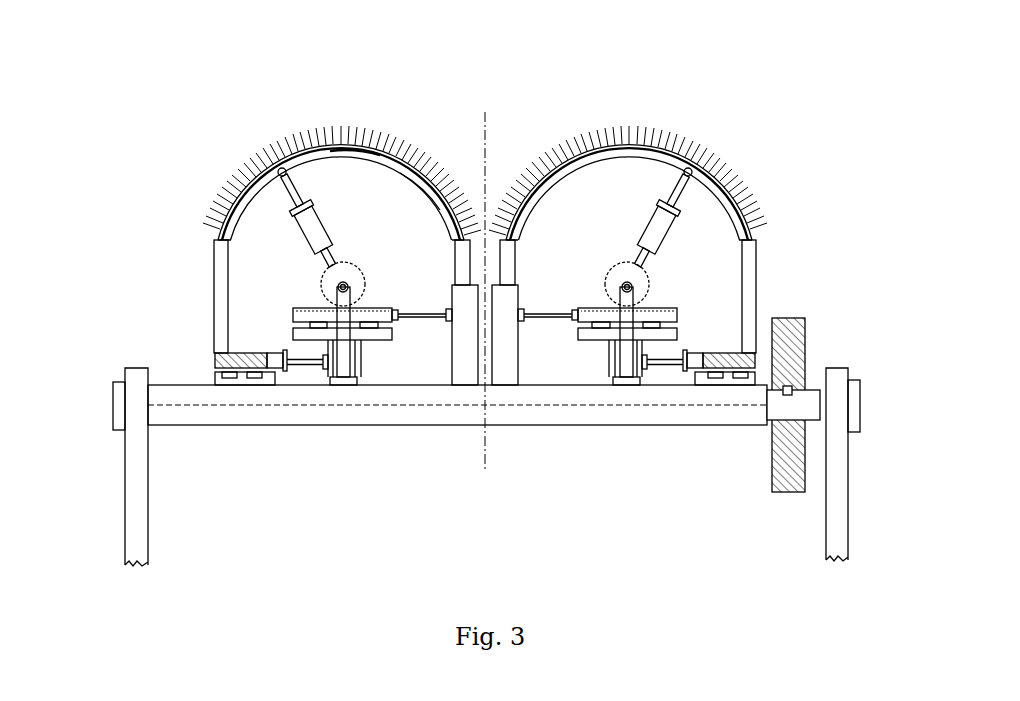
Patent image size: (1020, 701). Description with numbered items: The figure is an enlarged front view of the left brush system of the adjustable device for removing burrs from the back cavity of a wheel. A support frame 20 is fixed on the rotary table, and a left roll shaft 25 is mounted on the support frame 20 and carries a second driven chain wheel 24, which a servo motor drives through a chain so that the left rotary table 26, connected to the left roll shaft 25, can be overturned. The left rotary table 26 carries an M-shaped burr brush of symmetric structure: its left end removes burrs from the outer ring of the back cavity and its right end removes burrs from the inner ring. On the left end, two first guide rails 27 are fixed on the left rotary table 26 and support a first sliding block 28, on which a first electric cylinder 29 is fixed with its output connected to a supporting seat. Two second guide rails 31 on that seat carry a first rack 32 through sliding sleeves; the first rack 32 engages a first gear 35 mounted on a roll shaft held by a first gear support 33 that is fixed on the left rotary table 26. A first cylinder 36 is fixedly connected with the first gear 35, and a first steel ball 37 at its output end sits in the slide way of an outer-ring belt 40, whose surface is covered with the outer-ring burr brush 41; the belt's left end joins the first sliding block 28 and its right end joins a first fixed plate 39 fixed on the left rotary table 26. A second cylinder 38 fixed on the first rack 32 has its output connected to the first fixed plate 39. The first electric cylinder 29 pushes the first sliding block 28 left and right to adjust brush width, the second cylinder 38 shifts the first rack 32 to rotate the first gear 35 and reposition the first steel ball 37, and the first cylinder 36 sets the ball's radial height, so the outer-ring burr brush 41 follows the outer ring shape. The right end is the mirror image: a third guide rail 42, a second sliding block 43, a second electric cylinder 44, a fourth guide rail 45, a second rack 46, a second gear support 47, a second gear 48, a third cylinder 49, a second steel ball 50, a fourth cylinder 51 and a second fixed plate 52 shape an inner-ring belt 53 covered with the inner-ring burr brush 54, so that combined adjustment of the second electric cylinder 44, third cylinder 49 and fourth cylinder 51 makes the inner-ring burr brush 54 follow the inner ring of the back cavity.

The support frame 20 is at (137, 463).
The second driven chain wheel 24 is at (797, 443).
The left roll shaft 25 is at (133, 412).
The left rotary table 26 is at (228, 408).
The first guide rail 27 is at (222, 358).
The first sliding block 28 is at (280, 358).
The first electric cylinder 29 is at (297, 335).
The second guide rail 31 is at (218, 382).
The first rack 32 is at (303, 313).
The first gear support 33 is at (338, 313).
The first gear 35 is at (327, 277).
The first cylinder 36 is at (302, 220).
The first steel ball 37 is at (242, 175).
The second cylinder 38 is at (281, 170).
The first fixed plate 39 is at (325, 152).
The outer-ring belt 40 is at (372, 157).
The outer-ring burr brush 41 is at (438, 208).
The third guide rail 42 is at (753, 380).
The second sliding block 43 is at (747, 362).
The second electric cylinder 44 is at (700, 360).
The fourth guide rail 45 is at (680, 332).
The second rack 46 is at (670, 313).
The second gear support 47 is at (637, 317).
The second gear 48 is at (645, 283).
The third cylinder 49 is at (672, 222).
The second steel ball 50 is at (690, 188).
The fourth cylinder 51 is at (517, 298).
The second fixed plate 52 is at (560, 307).
The inner-ring belt 53 is at (602, 157).
The inner-ring burr brush 54 is at (565, 145).